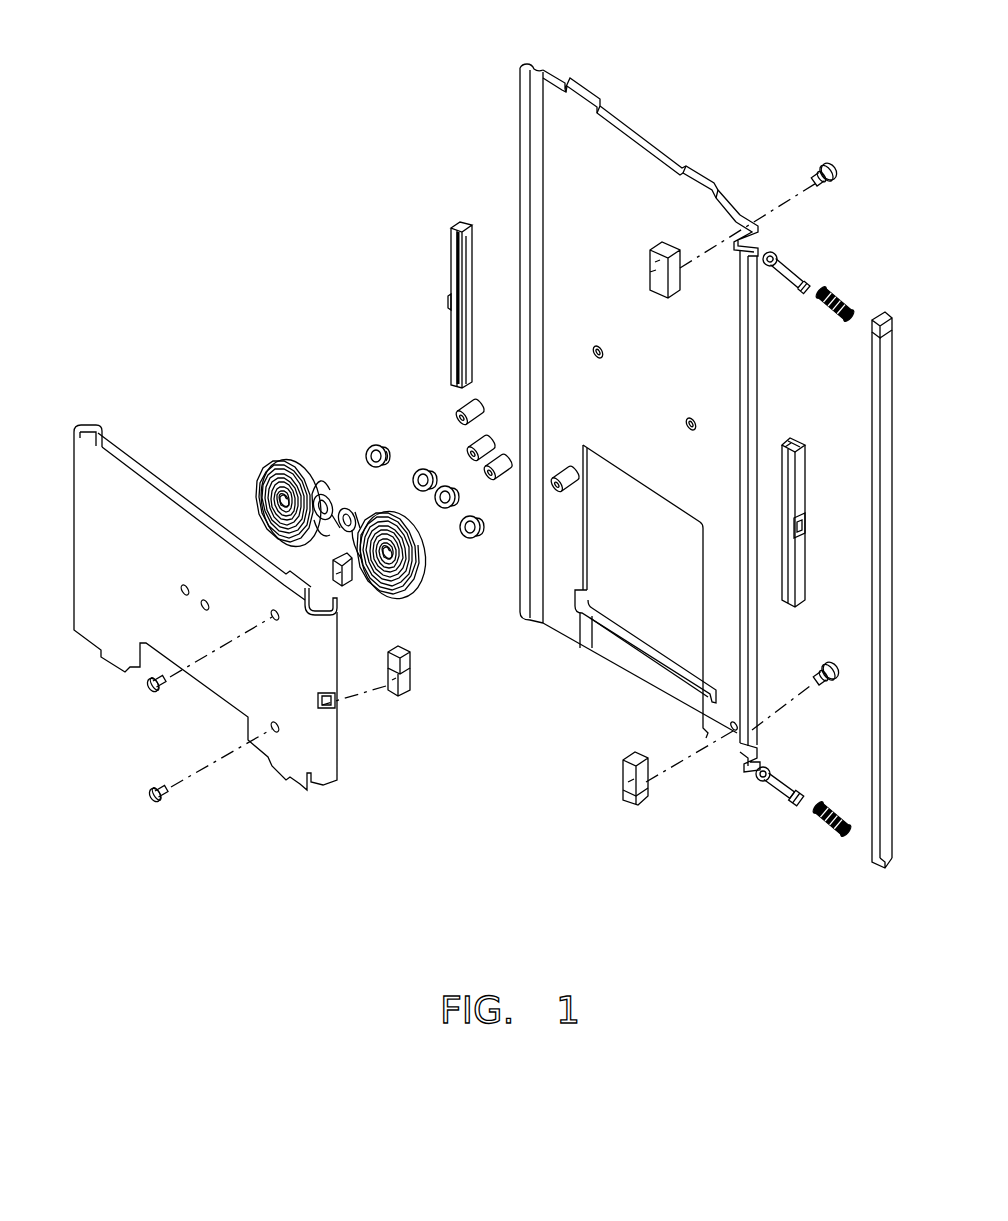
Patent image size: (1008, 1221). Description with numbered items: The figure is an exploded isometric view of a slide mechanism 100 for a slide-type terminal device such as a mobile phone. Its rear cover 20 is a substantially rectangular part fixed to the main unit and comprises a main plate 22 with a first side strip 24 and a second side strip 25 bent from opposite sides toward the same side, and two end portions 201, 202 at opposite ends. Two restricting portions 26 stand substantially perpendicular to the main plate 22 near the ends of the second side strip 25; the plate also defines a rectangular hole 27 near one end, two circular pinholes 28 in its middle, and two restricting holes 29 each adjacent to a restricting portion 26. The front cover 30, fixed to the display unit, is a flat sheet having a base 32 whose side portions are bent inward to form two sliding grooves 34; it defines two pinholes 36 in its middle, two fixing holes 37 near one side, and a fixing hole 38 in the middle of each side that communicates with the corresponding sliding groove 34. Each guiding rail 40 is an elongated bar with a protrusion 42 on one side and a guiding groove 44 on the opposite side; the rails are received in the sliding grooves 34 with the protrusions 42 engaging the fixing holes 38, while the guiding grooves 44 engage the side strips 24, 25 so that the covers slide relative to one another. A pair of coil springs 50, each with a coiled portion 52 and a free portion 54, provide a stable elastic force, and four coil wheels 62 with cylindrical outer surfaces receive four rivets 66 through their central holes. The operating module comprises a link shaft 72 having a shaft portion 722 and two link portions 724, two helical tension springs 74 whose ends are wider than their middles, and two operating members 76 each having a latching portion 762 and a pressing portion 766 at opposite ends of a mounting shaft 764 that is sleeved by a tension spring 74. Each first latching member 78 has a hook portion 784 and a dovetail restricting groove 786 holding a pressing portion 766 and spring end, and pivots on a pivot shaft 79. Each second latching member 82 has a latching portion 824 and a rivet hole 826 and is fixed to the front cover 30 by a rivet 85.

The slide mechanism 100 is at (352, 26).
The rear cover 20 is at (585, 76).
The end portion 201 is at (636, 128).
The end portion 202 is at (657, 675).
The main plate 22 is at (688, 192).
The first side strip 24 is at (518, 82).
The second side strip 25 is at (749, 642).
The restricting portion 26 is at (741, 212).
The rectangular hole 27 is at (638, 602).
The pinhole 28 is at (595, 350).
The restricting hole 29 is at (735, 733).
The front cover 30 is at (128, 418).
The base 32 is at (141, 496).
The sliding groove 34 is at (84, 428).
The pinhole 36 is at (182, 596).
The fixing hole 37 is at (272, 731).
The fixing hole 38 is at (338, 706).
The guiding rail 40 is at (811, 478).
The protrusion 42 is at (807, 527).
The guiding groove 44 is at (796, 441).
The coil spring 50 is at (254, 485).
The coiled portion 52 is at (268, 511).
The free portion 54 is at (328, 496).
The coil wheel 62 is at (370, 450).
The rivet 66 is at (479, 405).
The link shaft 72 is at (871, 412).
The shaft portion 722 is at (875, 382).
The link portion 724 is at (876, 312).
The tension spring 74 is at (829, 284).
The operating member 76 is at (783, 265).
The latching portion 762 is at (796, 801).
The mounting shaft 764 is at (786, 786).
The pressing portion 766 is at (770, 771).
The first latching member 78 is at (658, 252).
The hook portion 784 is at (632, 755).
The restricting groove 786 is at (628, 797).
The pivot shaft 79 is at (826, 680).
The second latching member 82 is at (418, 665).
The latching portion 824 is at (408, 683).
The rivet hole 826 is at (392, 655).
The rivet 85 is at (165, 800).